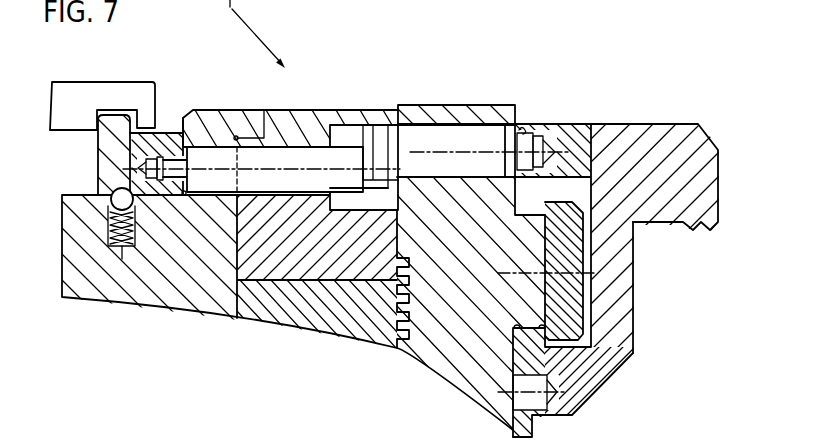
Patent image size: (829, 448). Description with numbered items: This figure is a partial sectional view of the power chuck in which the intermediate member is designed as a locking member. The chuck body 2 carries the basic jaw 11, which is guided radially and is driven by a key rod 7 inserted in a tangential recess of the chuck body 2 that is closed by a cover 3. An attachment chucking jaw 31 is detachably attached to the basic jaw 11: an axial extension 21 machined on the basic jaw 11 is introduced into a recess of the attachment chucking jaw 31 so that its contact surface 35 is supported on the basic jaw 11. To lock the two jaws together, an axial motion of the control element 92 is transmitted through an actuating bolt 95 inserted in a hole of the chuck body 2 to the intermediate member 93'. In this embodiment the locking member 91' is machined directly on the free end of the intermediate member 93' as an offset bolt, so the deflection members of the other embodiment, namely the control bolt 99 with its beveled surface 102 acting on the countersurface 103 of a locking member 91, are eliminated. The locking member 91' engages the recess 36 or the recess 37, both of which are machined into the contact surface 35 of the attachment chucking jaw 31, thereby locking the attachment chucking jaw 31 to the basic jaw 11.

The chuck body 2 is at (270, 267).
The cover 3 is at (180, 287).
The key rod 7 is at (320, 312).
The basic jaw 11 is at (433, 115).
The axial extension 21 is at (561, 193).
The attachment chucking jaw 31 is at (627, 143).
The contact surface 35 is at (510, 347).
The recess 36 is at (527, 131).
The recess 37 is at (540, 360).
The locking member 91 is at (629, 8).
The locking member 91' is at (489, 97).
The control element 92 is at (113, 138).
The intermediate member 93' is at (295, 130).
The actuating bolt 95 is at (298, 160).
The control bolt 99 is at (398, 8).
The beveled surface 102 is at (448, 8).
The countersurface 103 is at (500, 8).